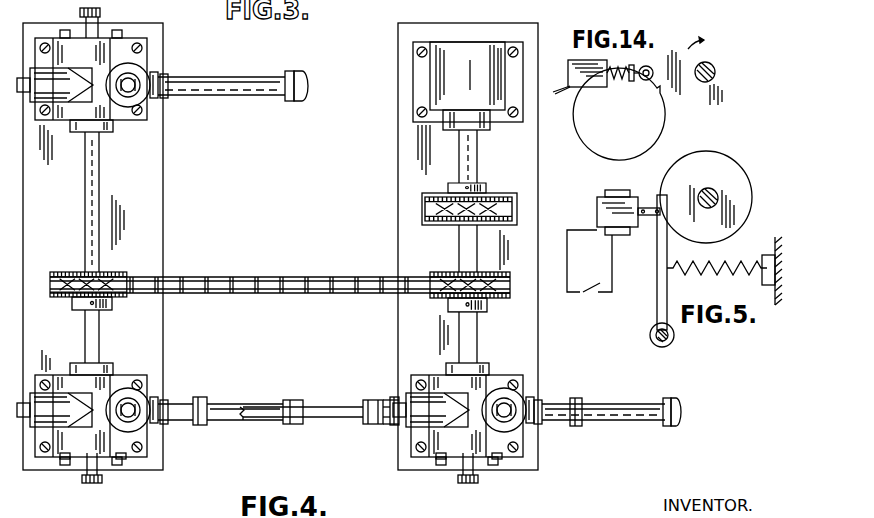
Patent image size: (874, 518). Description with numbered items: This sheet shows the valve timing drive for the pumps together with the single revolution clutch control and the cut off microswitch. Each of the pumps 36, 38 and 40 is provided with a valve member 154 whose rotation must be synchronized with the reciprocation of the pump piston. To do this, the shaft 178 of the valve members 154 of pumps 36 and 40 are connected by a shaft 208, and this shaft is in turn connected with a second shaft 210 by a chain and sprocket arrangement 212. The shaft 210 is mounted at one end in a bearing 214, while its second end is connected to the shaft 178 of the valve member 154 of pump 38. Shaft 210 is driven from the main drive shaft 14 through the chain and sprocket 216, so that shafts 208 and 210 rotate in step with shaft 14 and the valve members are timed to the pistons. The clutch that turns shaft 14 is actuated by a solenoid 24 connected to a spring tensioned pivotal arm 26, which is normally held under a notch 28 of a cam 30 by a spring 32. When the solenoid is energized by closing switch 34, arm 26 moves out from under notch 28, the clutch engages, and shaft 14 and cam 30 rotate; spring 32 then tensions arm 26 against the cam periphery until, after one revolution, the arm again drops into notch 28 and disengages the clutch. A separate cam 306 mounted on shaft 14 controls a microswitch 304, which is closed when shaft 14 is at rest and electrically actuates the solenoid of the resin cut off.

In FIG. 4, the pump 36 is at (116, 479).
In FIG. 4, the pump 38 is at (513, 477).
In FIG. 4, the pump 40 is at (146, 18).
In FIG. 4, the valve member 154 is at (127, 50).
In FIG. 4, the shaft 178 is at (81, 131).
In FIG. 4, the shaft 208 is at (100, 196).
In FIG. 4, the second shaft 210 is at (478, 170).
In FIG. 4, the chain and sprocket arrangement 212 is at (232, 278).
In FIG. 4, the bearing 214 is at (482, 47).
In FIG. 4, the chain and sprocket 216 is at (512, 197).
In FIG. 14, the microswitch 304 is at (604, 87).
In FIG. 14, the cam 306 is at (730, 56).
In FIG. 14, the main drive shaft 14 is at (713, 75).
In FIG. 5, the main drive shaft 14 is at (703, 190).
In FIG. 5, the solenoid 24 is at (597, 210).
In FIG. 5, the pivotal arm 26 is at (657, 296).
In FIG. 5, the notch 28 is at (657, 196).
In FIG. 5, the cam 30 is at (738, 178).
In FIG. 5, the spring 32 is at (715, 268).
In FIG. 5, the switch 34 is at (591, 298).